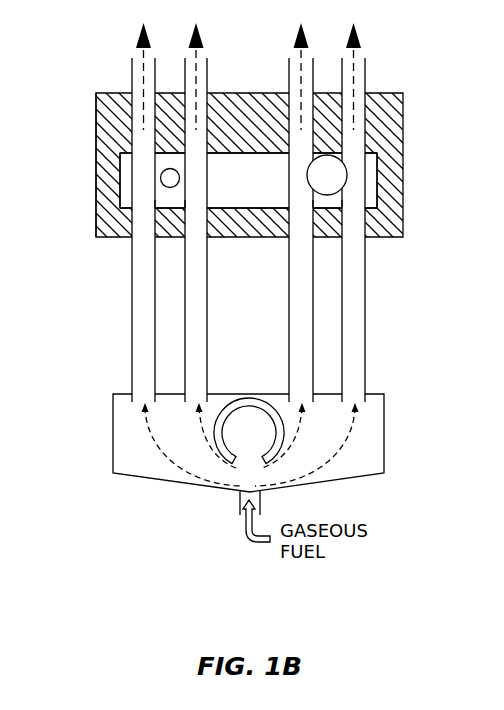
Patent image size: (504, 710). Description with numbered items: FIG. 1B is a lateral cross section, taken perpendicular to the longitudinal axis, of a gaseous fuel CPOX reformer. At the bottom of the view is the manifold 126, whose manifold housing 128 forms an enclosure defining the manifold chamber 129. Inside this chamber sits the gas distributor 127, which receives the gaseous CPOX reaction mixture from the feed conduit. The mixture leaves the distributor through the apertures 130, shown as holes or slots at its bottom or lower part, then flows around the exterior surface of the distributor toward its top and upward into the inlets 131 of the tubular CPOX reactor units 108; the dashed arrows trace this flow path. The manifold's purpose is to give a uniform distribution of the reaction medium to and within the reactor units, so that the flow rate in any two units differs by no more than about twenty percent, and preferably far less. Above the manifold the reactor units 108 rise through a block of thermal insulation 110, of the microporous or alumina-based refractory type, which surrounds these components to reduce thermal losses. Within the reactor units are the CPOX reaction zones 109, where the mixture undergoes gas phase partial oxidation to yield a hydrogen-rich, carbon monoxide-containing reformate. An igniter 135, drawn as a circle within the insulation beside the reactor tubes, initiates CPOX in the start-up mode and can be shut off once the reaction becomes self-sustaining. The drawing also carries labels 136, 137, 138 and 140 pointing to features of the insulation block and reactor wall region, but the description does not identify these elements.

The tubular CPOX reactor unit 108 is at (313, 280).
The CPOX reaction zone 109 is at (302, 202).
The thermal insulation 110 is at (376, 93).
The manifold 126 is at (291, 463).
The gas distributor 127 is at (215, 442).
The manifold housing 128 is at (384, 413).
The manifold chamber 129 is at (358, 453).
The apertures 130 is at (247, 468).
The inlets 131 is at (194, 385).
The igniter 135 is at (348, 172).
The block wall 136 is at (97, 132).
The recess 137 is at (173, 200).
The window opening 138 is at (242, 191).
The orifice 140 is at (163, 172).